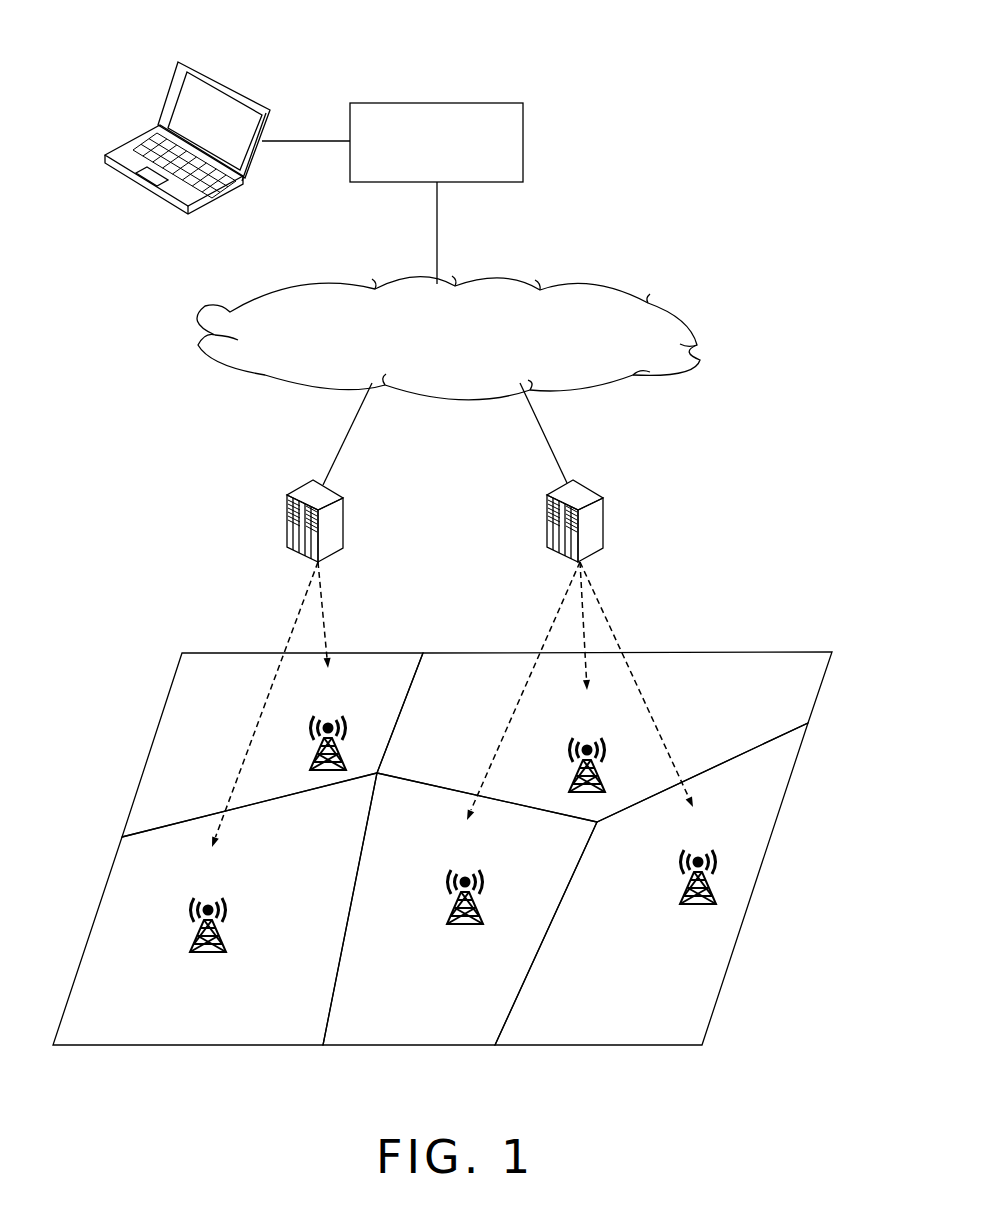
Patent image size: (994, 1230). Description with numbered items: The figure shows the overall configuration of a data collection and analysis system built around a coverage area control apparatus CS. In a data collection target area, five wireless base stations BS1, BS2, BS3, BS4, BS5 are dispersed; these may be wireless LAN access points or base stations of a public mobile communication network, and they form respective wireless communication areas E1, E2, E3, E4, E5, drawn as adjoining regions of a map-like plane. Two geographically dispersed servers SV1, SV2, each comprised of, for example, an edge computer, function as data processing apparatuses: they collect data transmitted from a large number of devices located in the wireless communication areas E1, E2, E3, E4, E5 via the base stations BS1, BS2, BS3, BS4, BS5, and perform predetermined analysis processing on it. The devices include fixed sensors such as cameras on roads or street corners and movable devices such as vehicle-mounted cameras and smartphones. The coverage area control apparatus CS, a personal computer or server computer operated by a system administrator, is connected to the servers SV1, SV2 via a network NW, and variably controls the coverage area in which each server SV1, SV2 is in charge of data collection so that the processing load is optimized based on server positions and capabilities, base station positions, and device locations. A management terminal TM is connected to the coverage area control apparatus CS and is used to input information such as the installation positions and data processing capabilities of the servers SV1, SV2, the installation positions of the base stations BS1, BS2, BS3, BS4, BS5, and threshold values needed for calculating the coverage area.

The management terminal TM is at (215, 78).
The coverage area control apparatus CS is at (455, 103).
The network NW is at (600, 278).
The server SV1 is at (338, 521).
The server SV2 is at (600, 521).
The wireless base station BS1 is at (329, 731).
The wireless base station BS2 is at (209, 911).
The wireless base station BS3 is at (586, 753).
The wireless base station BS4 is at (465, 885).
The wireless base station BS5 is at (698, 864).
The wireless communication area E1 is at (172, 718).
The wireless communication area E2 is at (102, 922).
The wireless communication area E3 is at (727, 658).
The wireless communication area E4 is at (418, 1047).
The wireless communication area E5 is at (723, 948).